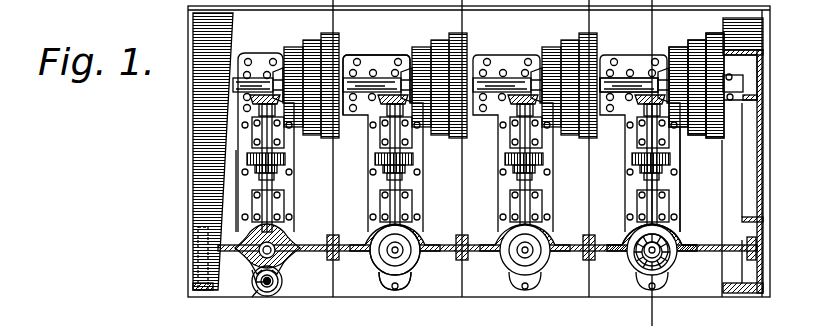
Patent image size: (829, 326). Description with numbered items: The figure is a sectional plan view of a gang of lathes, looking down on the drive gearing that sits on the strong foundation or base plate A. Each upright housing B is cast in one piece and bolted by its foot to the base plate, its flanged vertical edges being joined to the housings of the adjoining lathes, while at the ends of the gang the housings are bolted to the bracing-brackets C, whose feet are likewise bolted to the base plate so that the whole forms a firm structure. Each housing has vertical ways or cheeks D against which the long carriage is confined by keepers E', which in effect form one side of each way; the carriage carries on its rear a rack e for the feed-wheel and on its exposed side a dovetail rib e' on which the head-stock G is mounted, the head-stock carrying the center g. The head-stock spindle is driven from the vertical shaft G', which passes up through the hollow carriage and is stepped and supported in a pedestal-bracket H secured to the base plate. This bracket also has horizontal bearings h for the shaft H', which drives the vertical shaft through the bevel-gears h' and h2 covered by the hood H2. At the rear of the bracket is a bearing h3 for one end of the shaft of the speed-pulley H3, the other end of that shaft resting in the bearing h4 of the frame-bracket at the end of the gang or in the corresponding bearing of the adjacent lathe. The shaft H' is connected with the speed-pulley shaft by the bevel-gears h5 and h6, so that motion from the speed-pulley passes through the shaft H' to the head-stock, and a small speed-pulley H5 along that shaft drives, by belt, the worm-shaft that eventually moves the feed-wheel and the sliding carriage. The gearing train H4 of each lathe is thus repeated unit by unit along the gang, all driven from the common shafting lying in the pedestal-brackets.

The foundation or base plate A is at (479, 163).
The upright housing B is at (344, 252).
The bracing-brackets C is at (197, 143).
The vertical ways or cheeks D is at (282, 225).
The keepers E' is at (278, 277).
The head-stock G is at (278, 283).
The vertical shaft G' is at (423, 252).
The pedestal-bracket H is at (280, 169).
The shaft H' is at (226, 191).
The hood H2 is at (408, 276).
The speed-pulley H3 is at (344, 58).
The gear wheel H4 is at (504, 85).
The small speed-pulley H5 is at (281, 161).
The rack e is at (213, 255).
The dovetail rib or bar e' is at (248, 280).
The center g is at (258, 295).
The horizontal bearings h is at (433, 168).
The bevel-gear h' is at (653, 231).
The bevel-gear h2 is at (671, 258).
The bearing h3 is at (626, 54).
The bearing h4 is at (730, 101).
The bevel-gear h5 is at (281, 70).
The bevel-gear h6 is at (282, 100).